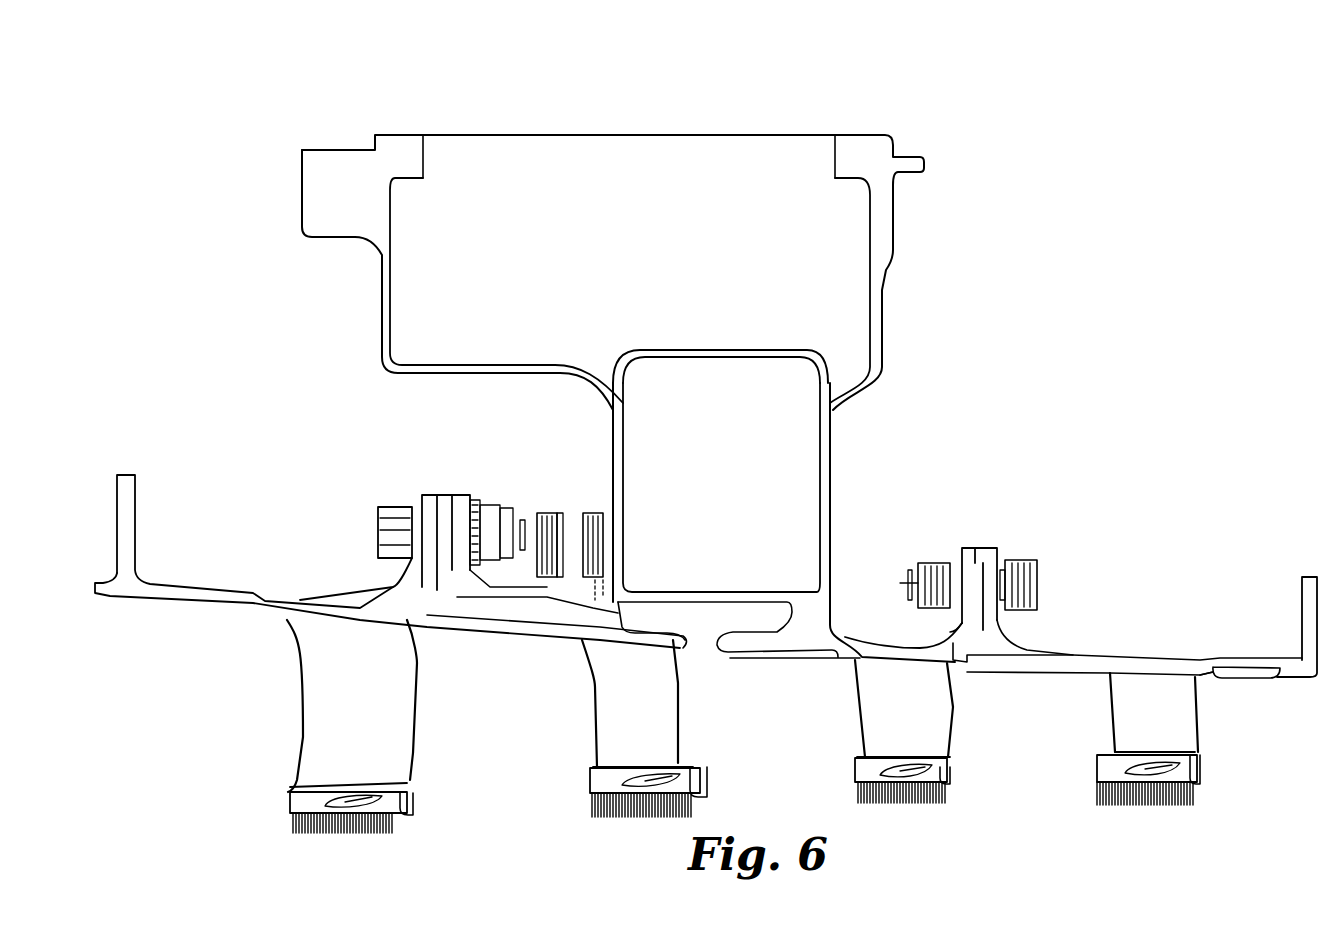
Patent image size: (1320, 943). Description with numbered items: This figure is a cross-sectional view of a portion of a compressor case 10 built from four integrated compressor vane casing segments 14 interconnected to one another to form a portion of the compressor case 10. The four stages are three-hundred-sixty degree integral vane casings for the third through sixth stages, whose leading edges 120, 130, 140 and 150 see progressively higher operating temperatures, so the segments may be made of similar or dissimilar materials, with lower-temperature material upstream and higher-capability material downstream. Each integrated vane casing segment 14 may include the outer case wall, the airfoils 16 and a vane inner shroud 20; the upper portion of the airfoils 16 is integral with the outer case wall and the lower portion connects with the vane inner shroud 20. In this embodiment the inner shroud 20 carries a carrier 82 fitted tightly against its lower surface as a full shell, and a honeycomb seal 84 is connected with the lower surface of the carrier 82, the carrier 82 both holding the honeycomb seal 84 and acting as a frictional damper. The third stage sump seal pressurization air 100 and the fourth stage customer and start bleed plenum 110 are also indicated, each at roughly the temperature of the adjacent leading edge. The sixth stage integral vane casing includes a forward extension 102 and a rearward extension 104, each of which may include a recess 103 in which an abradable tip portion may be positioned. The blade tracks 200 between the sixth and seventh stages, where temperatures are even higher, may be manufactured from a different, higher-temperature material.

The compressor case 10 is at (689, 112).
The integrated vane casing segment 14 is at (239, 540).
The airfoils 16 is at (420, 687).
The vane inner shroud 20 is at (413, 783).
The carrier 82 is at (410, 825).
The honeycomb seal 84 is at (330, 833).
The third stage sump seal pressurization air 100 is at (557, 613).
The forward extension 102 is at (1040, 640).
The recess 103 is at (1003, 652).
The rearward extension 104 is at (1283, 652).
The fourth stage customer and start bleed plenum 110 is at (770, 456).
The leading edge 120 is at (297, 705).
The leading edge 130 is at (583, 710).
The leading edge 140 is at (855, 688).
The leading edge 150 is at (1110, 700).
The blade tracks 200 is at (1280, 677).